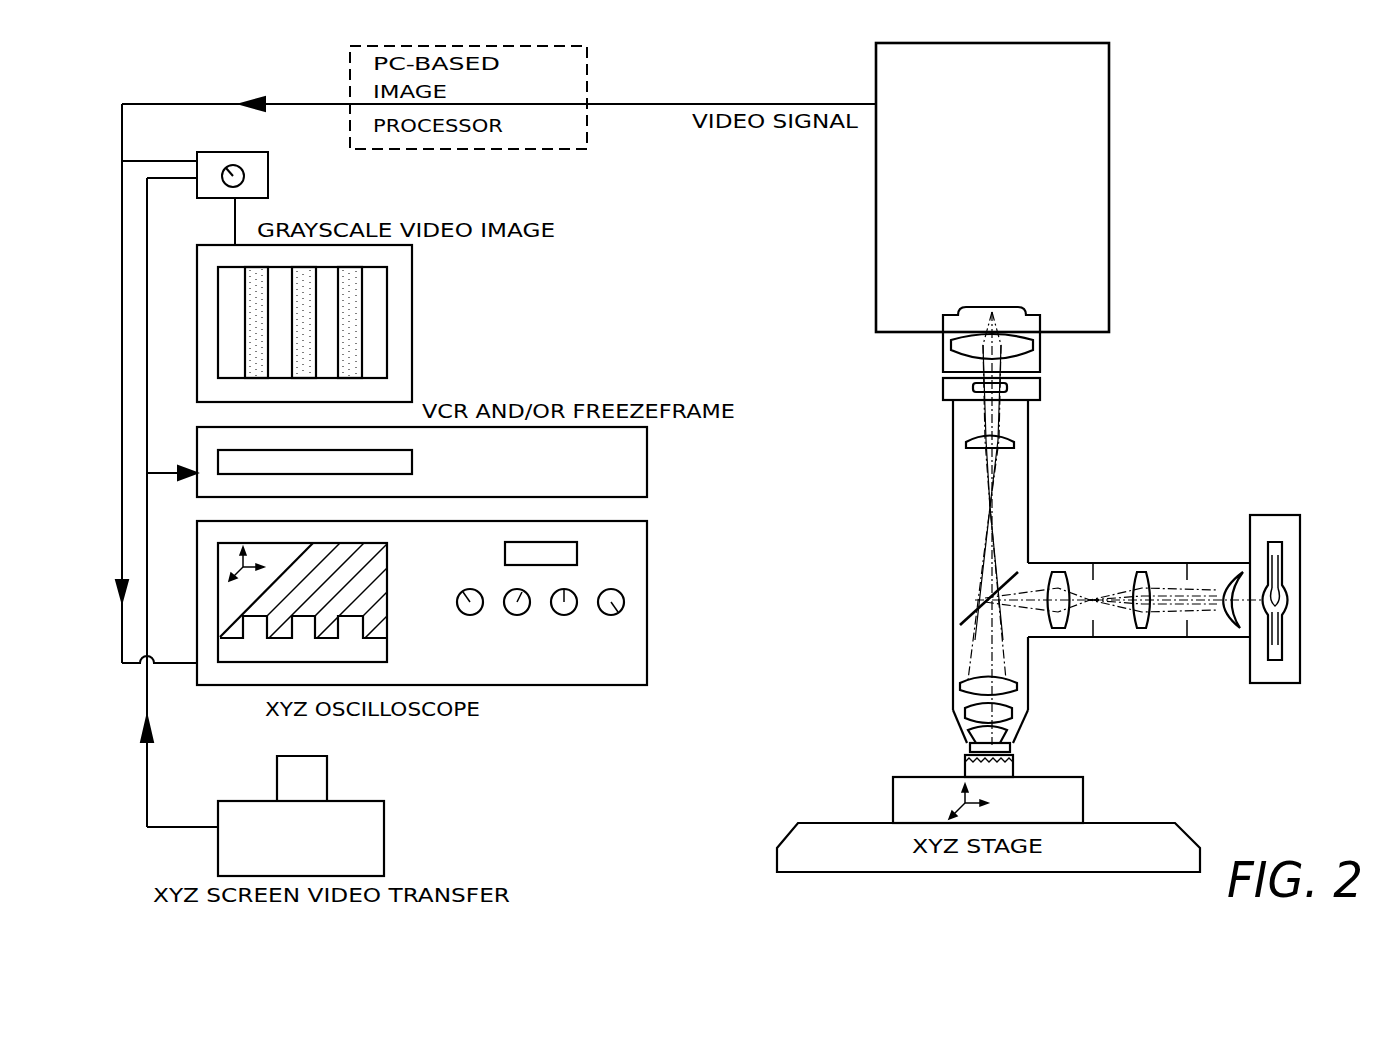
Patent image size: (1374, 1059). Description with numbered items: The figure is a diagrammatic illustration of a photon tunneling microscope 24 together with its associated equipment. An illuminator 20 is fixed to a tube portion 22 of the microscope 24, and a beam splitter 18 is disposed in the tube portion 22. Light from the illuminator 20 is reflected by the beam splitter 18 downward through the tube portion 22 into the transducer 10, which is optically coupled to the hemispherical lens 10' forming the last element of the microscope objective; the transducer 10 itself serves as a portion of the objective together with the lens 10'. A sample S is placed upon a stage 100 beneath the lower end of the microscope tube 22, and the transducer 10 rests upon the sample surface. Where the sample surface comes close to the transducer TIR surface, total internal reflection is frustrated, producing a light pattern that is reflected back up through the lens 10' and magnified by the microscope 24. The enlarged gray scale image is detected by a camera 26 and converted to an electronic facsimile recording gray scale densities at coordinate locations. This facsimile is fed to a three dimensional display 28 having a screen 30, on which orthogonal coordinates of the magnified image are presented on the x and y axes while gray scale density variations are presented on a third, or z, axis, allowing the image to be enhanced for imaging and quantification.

The camera 26 is at (983, 131).
The photon tunneling microscope 24 is at (953, 448).
The tube portion 22 is at (953, 527).
The beam splitter 18 is at (978, 590).
The illuminator 20 is at (1125, 563).
The hemispherical lens 10' is at (940, 715).
The transducer 10 is at (1020, 762).
The sample S is at (965, 772).
The stage 100 is at (798, 823).
The three dimensional display 28 is at (587, 687).
The screen 30 is at (253, 648).